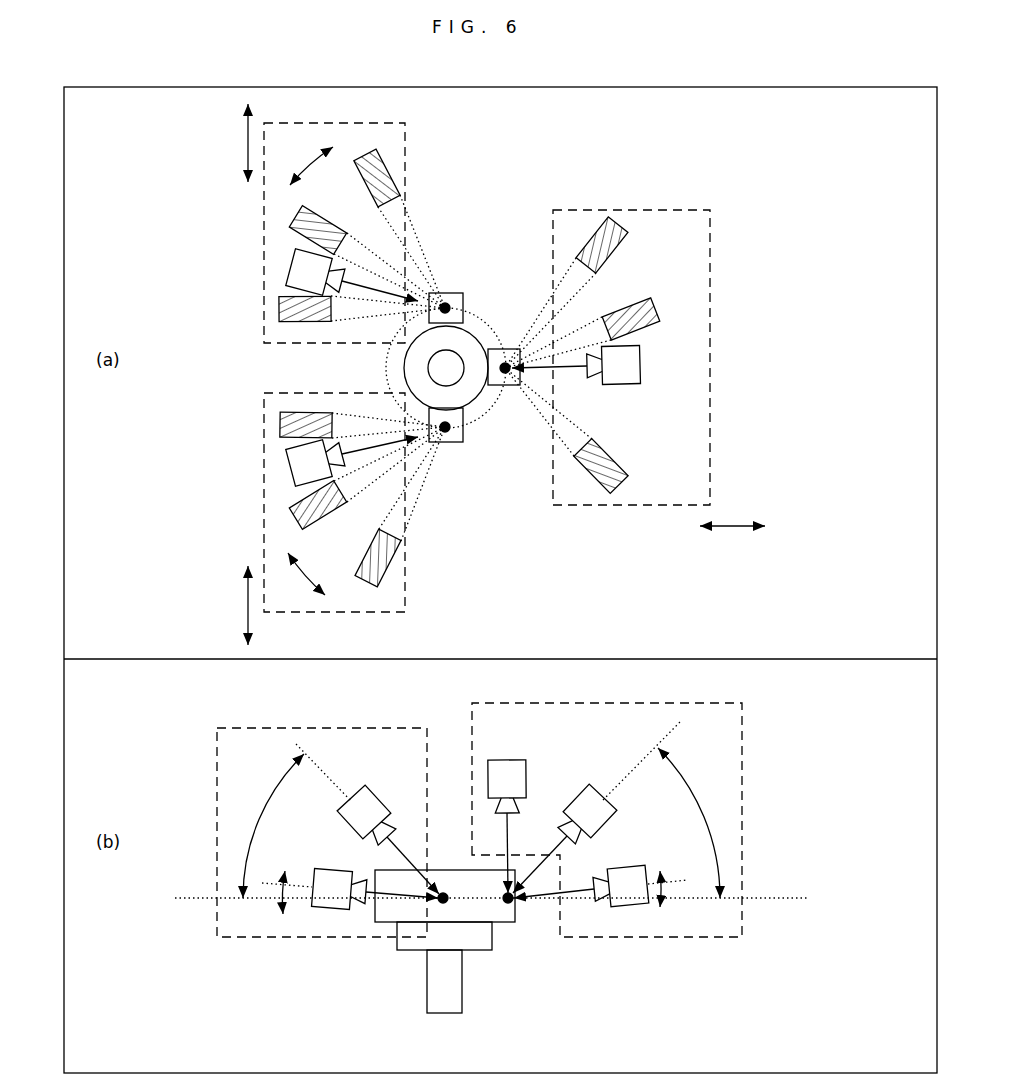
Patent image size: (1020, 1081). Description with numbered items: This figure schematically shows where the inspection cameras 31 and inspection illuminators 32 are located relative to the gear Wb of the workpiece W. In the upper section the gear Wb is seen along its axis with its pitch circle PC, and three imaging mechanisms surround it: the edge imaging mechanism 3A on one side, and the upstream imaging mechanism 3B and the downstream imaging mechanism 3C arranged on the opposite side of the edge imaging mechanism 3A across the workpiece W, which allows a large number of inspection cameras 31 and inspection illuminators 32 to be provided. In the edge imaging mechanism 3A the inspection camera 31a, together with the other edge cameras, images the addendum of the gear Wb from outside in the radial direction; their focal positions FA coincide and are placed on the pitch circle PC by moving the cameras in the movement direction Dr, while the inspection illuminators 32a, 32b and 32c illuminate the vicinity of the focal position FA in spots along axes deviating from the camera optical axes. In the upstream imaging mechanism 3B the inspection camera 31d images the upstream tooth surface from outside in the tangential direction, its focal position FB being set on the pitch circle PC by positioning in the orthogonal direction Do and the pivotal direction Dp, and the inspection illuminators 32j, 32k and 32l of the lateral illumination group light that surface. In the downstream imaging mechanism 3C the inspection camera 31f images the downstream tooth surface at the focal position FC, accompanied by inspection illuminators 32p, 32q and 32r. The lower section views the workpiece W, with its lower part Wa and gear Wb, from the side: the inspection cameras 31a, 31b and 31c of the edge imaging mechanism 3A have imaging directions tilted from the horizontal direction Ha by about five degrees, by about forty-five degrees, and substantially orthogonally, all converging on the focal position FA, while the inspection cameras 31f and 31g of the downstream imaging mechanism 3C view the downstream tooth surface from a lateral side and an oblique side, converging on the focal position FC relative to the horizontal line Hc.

The edge imaging mechanism 3A is at (714, 232).
The upstream imaging mechanism 3B is at (410, 153).
The downstream imaging mechanism 3C is at (410, 578).
The inspection camera 31 is at (483, 615).
The inspection camera 31a is at (637, 369).
The inspection camera 31b is at (596, 800).
The inspection camera 31c is at (505, 770).
The inspection camera 31d is at (300, 270).
The inspection camera 31f is at (290, 467).
The inspection camera 31g is at (376, 808).
The inspection illuminator 32 is at (484, 370).
The inspection illuminator 32a is at (618, 490).
The inspection illuminator 32b is at (660, 310).
The inspection illuminator 32c is at (617, 218).
The inspection illuminator 32j is at (374, 152).
The inspection illuminator 32k is at (300, 222).
The inspection illuminator 32l is at (282, 306).
The inspection illuminator 32p is at (376, 588).
The inspection illuminator 32q is at (296, 512).
The inspection illuminator 32r is at (282, 425).
The focal position FA is at (506, 362).
The focal position FB is at (446, 303).
The focal position FC is at (447, 432).
The pitch circle PC is at (479, 418).
The workpiece W is at (469, 683).
The workpiece base portion Wa is at (473, 945).
The gear Wb is at (404, 368).
The orthogonal direction Do is at (230, 374).
The pivotal direction Dp is at (306, 365).
The movement direction Dr is at (732, 514).
The horizontal reference line Hc is at (315, 899).
The horizontal direction Ha is at (668, 899).